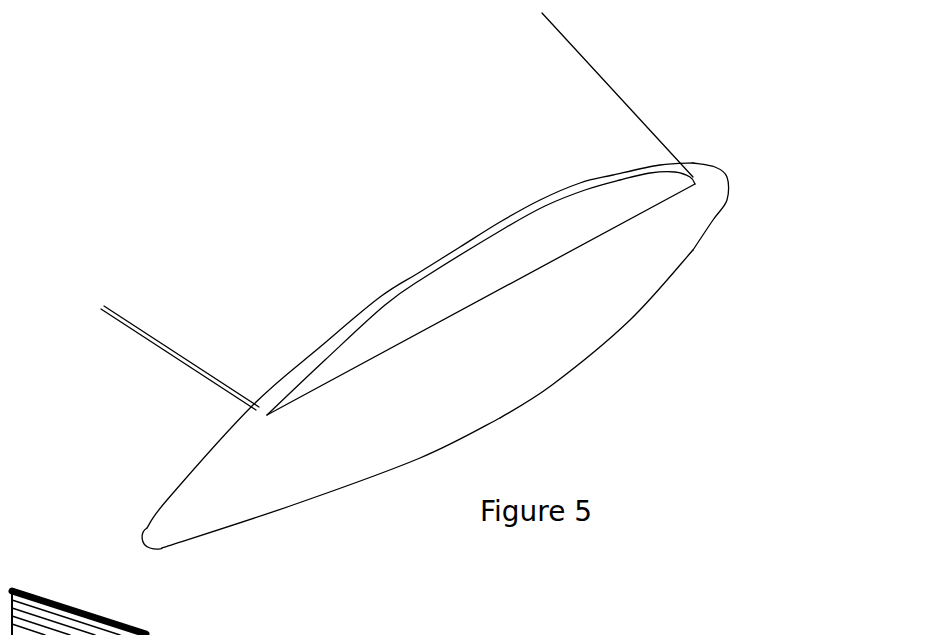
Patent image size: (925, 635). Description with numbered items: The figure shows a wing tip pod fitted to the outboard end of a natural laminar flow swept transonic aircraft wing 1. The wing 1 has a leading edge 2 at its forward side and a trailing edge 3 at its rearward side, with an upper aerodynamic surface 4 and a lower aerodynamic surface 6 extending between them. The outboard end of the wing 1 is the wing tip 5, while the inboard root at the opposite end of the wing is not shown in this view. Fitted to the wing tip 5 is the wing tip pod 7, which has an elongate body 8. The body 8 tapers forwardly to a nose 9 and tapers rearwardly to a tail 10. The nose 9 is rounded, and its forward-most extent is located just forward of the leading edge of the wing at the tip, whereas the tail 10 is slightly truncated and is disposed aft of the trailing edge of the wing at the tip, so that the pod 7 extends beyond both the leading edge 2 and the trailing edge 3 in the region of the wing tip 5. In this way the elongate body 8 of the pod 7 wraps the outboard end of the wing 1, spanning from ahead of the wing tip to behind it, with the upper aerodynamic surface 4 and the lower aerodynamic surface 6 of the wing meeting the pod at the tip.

The aircraft wing 1 is at (635, 52).
The leading edge 2 is at (635, 108).
The trailing edge 3 is at (137, 337).
The upper aerodynamic surface 4 is at (408, 205).
The wing tip 5 is at (523, 228).
The lower aerodynamic surface 6 is at (395, 370).
The wing tip pod 7 is at (605, 318).
The elongate body 8 is at (525, 365).
The nose 9 is at (733, 167).
The tail 10 is at (145, 543).